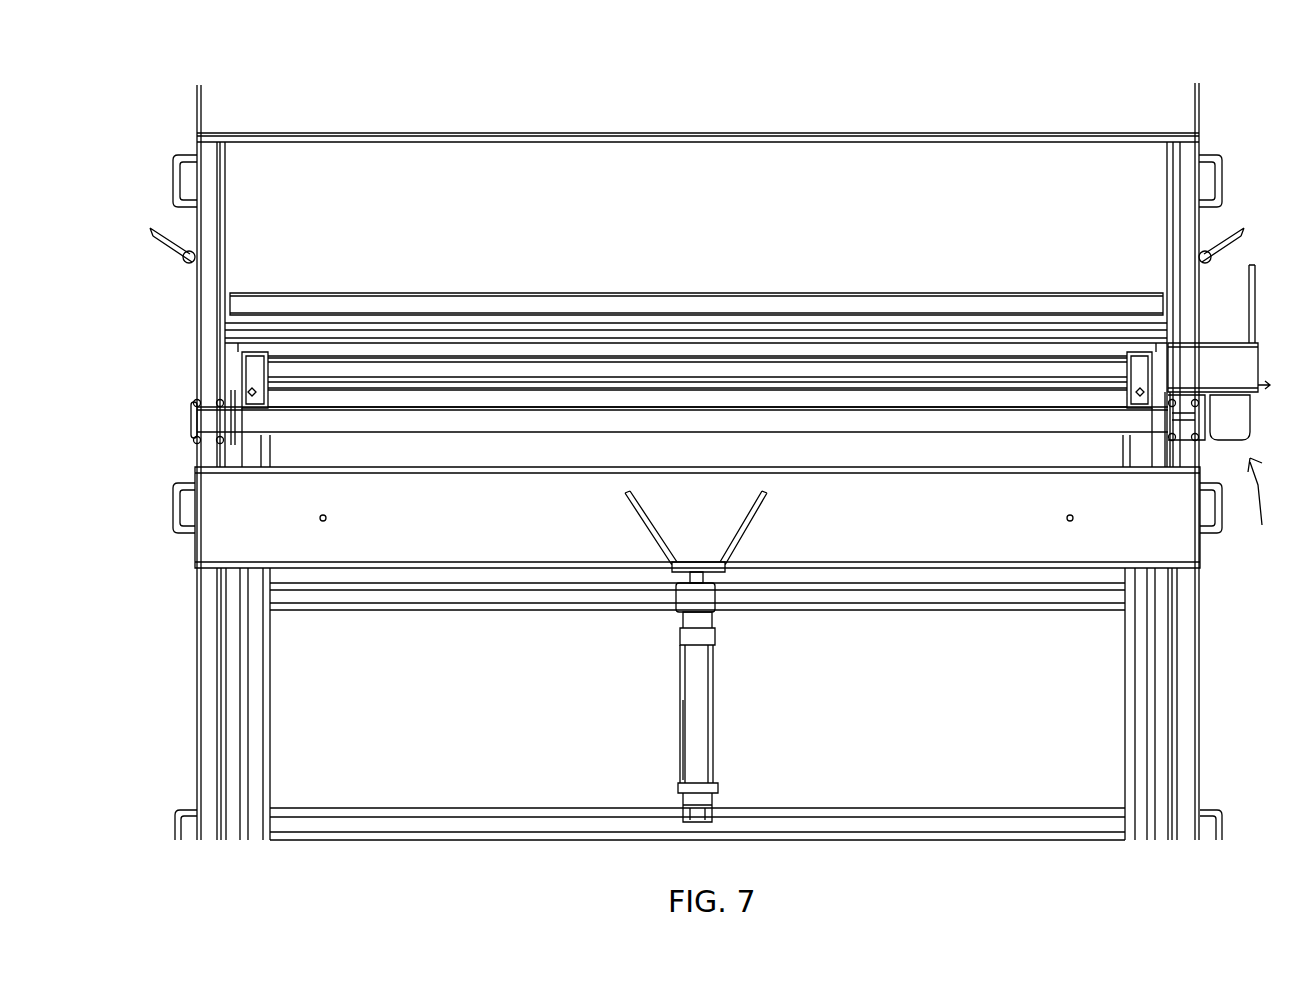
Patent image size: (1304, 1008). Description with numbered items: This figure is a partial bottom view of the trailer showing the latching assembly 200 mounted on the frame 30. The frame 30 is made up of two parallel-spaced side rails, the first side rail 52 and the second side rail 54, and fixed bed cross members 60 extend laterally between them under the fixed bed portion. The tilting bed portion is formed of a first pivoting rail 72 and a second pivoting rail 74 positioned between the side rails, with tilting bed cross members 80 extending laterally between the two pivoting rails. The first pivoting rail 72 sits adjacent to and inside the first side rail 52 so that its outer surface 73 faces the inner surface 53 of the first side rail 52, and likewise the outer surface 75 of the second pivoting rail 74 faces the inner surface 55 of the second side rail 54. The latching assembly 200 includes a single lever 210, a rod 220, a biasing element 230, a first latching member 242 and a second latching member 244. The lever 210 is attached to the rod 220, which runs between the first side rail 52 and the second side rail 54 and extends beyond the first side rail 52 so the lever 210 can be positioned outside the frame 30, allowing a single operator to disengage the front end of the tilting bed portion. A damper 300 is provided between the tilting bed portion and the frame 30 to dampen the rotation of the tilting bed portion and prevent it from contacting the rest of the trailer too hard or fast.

The frame 30 is at (297, 540).
The first side rail 52 is at (205, 690).
The inner surface of the first side rail 53 is at (218, 649).
The second side rail 54 is at (1182, 718).
The inner surface of the second side rail 55 is at (1162, 666).
The fixed bed cross members 60 is at (388, 826).
The first pivoting rail 72 is at (255, 775).
The outer surface of the first pivot rail 73 is at (243, 728).
The second pivoting rail 74 is at (1137, 782).
The outer surface of the second pivot rail 75 is at (1155, 800).
The tilting bed cross members 80 is at (530, 595).
The latching assembly 200 is at (1274, 513).
The lever 210 is at (1253, 280).
The rod 220 is at (455, 418).
The biasing element 230 is at (1228, 437).
The first latching member 242 is at (1158, 295).
The second latching member 244 is at (248, 295).
The damper 300 is at (720, 703).